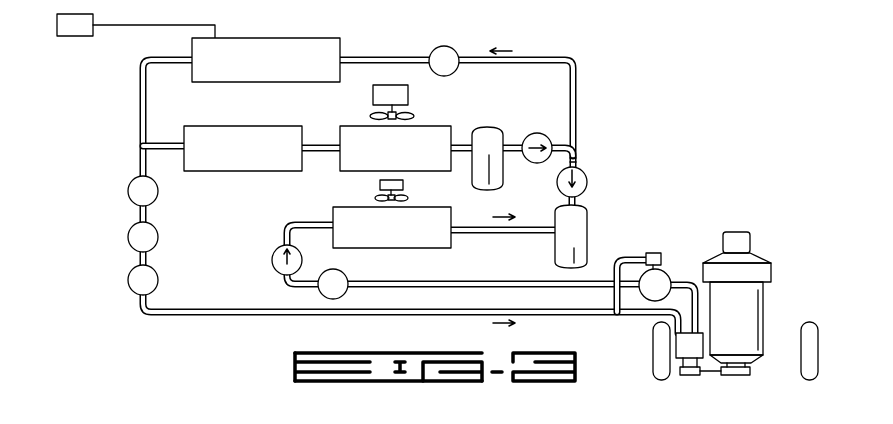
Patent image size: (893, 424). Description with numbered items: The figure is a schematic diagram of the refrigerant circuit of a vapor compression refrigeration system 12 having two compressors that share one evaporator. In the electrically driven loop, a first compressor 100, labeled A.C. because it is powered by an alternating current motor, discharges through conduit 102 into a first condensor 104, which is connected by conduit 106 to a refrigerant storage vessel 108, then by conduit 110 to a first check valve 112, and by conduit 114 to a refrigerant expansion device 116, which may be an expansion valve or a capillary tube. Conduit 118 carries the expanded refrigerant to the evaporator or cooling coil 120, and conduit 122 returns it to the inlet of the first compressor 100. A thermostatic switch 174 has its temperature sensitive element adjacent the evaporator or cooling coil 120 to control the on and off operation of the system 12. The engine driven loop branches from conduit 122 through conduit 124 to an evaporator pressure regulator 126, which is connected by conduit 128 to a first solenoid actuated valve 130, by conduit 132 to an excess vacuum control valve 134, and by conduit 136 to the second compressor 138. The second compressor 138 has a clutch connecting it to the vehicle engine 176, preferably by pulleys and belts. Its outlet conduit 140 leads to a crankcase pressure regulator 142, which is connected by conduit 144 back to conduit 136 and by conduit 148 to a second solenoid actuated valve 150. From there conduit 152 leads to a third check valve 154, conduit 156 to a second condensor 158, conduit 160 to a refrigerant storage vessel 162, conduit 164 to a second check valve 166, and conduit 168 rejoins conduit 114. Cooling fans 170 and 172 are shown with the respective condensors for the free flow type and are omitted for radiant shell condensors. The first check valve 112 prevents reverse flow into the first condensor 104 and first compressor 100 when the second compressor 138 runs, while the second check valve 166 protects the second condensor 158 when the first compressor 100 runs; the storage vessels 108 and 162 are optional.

The refrigeration system 12 is at (666, 142).
The first compressor 100 is at (205, 133).
The conduit 102 is at (313, 143).
The first condensor 104 is at (422, 132).
The conduit 106 is at (464, 152).
The refrigerant storage vessel 108 is at (487, 128).
The conduit 110 is at (518, 137).
The first check valve 112 is at (548, 138).
The conduit 114 is at (532, 58).
The refrigerant expansion device 116 is at (446, 47).
The conduit 118 is at (372, 58).
The evaporator or cooling coil 120 is at (278, 42).
The conduit 122 is at (140, 108).
The conduit 124 is at (140, 162).
The evaporator pressure regulator 126 is at (128, 195).
The conduit 128 is at (141, 214).
The first solenoid actuated valve 130 is at (130, 240).
The conduit 132 is at (147, 258).
The excess vacuum control valve 134 is at (129, 288).
The conduit 136 is at (227, 315).
The second compressor 138 is at (683, 347).
The conduit 140 is at (671, 278).
The crankcase pressure regulator 142 is at (670, 270).
The conduit 144 is at (625, 253).
The conduit 148 is at (466, 283).
The second solenoid actuated valve 150 is at (339, 273).
The conduit 152 is at (285, 283).
The third check valve 154 is at (277, 246).
The conduit 156 is at (300, 221).
The second condensor 158 is at (343, 207).
The conduit 160 is at (544, 224).
The refrigerant storage vessel 162 is at (580, 233).
The conduit 164 is at (587, 201).
The second check valve 166 is at (587, 179).
The conduit 168 is at (575, 160).
The cooling fan 170 is at (383, 88).
The cooling fan 172 is at (403, 185).
The thermostatic switch 174 is at (80, 36).
The vehicle engine 176 is at (750, 326).